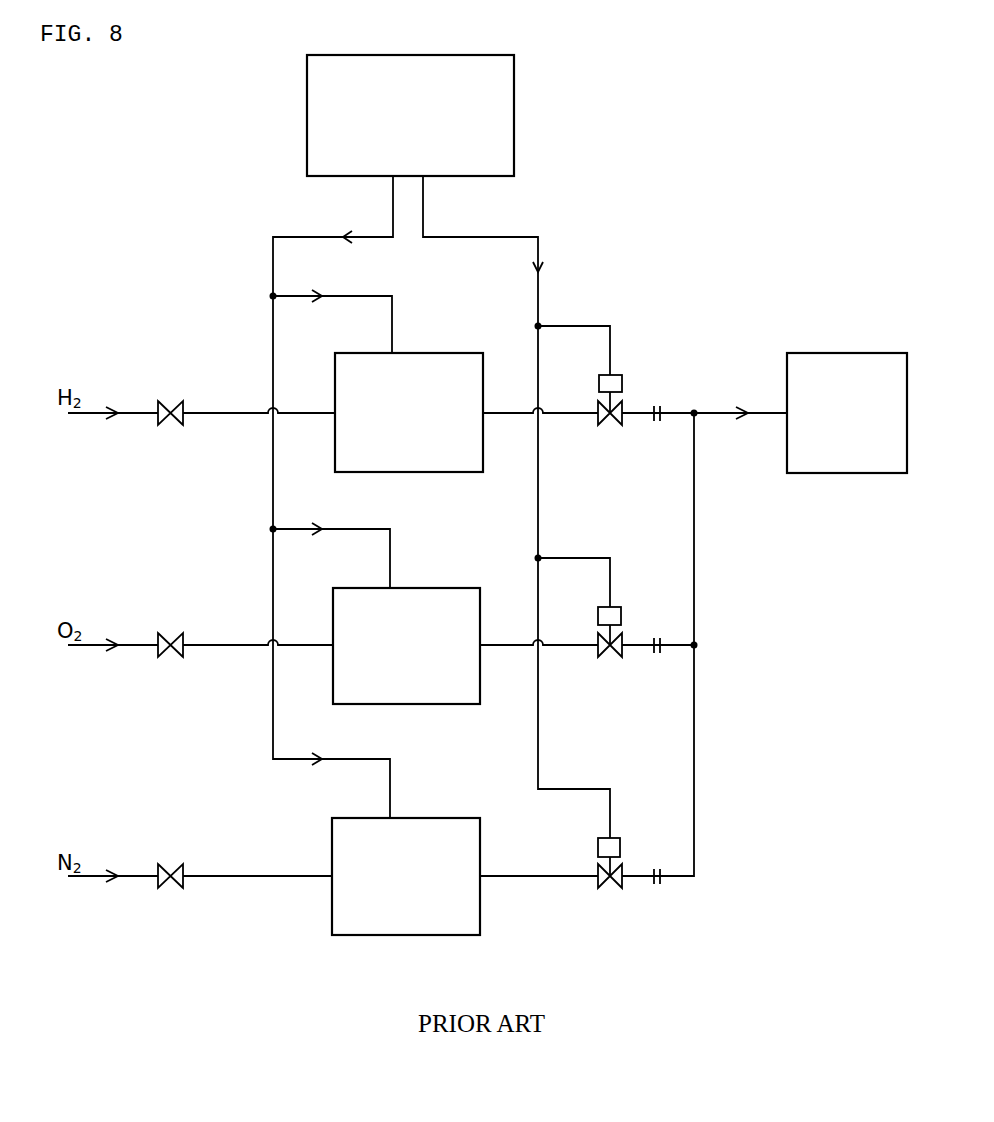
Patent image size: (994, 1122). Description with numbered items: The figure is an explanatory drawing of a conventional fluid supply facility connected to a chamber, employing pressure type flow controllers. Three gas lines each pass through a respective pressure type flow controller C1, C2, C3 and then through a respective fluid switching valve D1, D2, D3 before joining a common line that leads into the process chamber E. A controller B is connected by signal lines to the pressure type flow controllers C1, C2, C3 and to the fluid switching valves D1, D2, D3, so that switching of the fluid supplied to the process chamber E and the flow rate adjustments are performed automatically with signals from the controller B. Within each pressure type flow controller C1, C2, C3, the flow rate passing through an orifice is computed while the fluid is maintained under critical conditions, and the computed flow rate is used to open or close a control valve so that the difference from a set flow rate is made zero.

The controller B is at (322, 133).
The pressure type flow controller C1 is at (423, 373).
The pressure type flow controller C2 is at (425, 607).
The pressure type flow controller C3 is at (422, 838).
The fluid switching valve D1 is at (622, 387).
The fluid switching valve D2 is at (618, 638).
The fluid switching valve D3 is at (618, 872).
The process chamber E is at (848, 380).